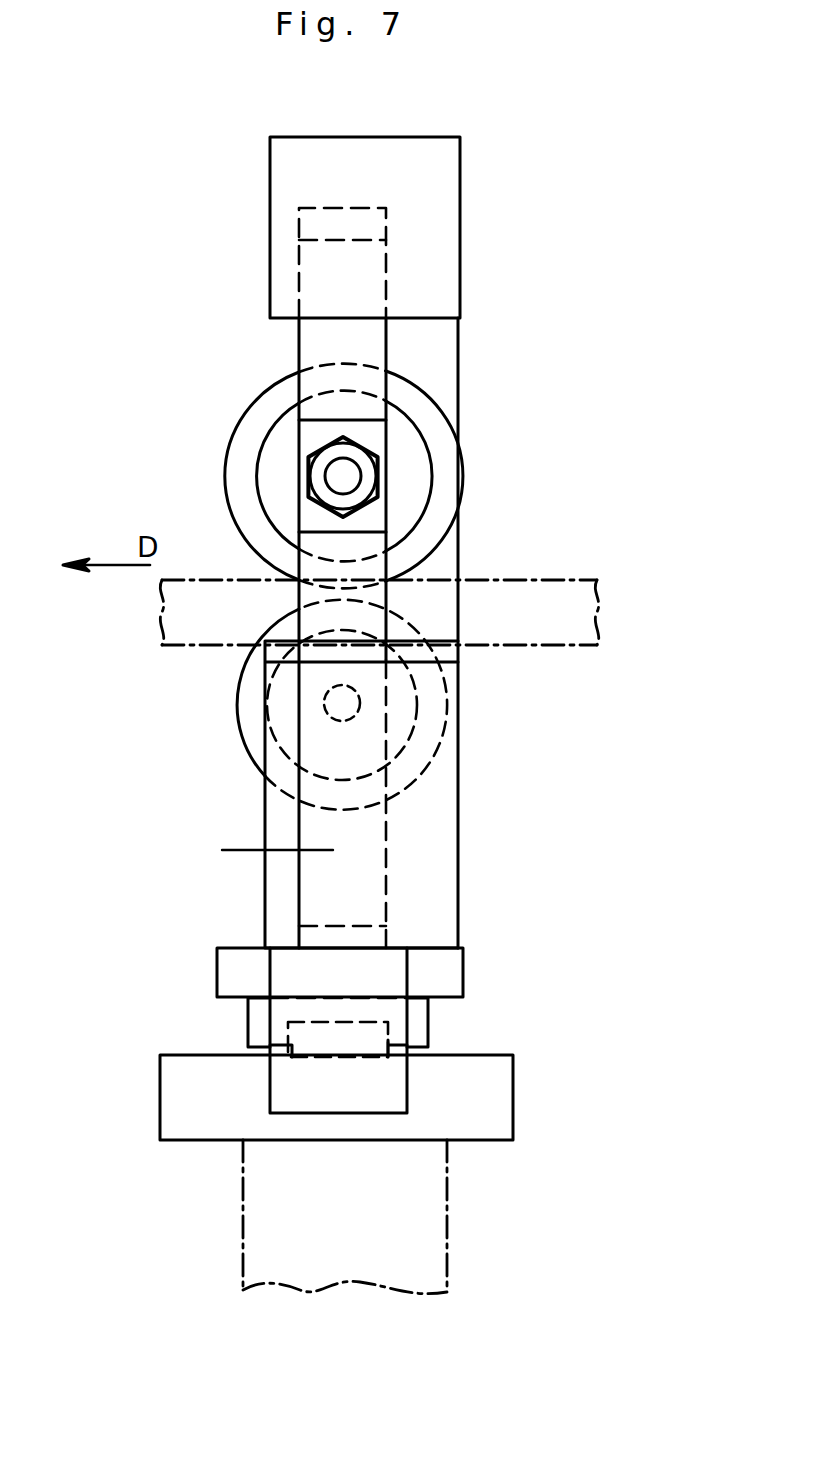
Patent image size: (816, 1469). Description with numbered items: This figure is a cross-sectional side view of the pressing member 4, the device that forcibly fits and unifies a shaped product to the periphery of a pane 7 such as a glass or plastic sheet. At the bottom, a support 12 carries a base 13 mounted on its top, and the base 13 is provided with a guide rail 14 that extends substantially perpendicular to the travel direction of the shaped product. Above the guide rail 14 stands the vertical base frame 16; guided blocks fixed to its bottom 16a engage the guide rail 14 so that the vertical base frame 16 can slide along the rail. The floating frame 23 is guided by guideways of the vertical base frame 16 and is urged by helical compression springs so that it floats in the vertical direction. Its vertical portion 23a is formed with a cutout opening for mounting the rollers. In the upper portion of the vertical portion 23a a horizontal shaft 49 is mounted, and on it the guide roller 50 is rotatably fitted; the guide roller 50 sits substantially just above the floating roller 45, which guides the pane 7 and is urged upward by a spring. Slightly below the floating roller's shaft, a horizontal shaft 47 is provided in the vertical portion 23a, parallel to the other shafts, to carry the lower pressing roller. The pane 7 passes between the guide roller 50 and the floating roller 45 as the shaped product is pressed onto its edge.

The pressing member 4 is at (500, 223).
The vertical base frame 16 is at (462, 360).
The floating frame 23 is at (292, 342).
The vertical portion 23a is at (306, 351).
The guide roller 50 is at (237, 472).
The horizontal shaft 49 is at (353, 483).
The pane 7 is at (540, 610).
The floating roller 45 is at (252, 714).
The horizontal shaft 47 is at (352, 706).
The bottom 16a is at (447, 980).
The guide rail 14 is at (320, 1033).
The base 13 is at (490, 1115).
The support 12 is at (413, 1237).